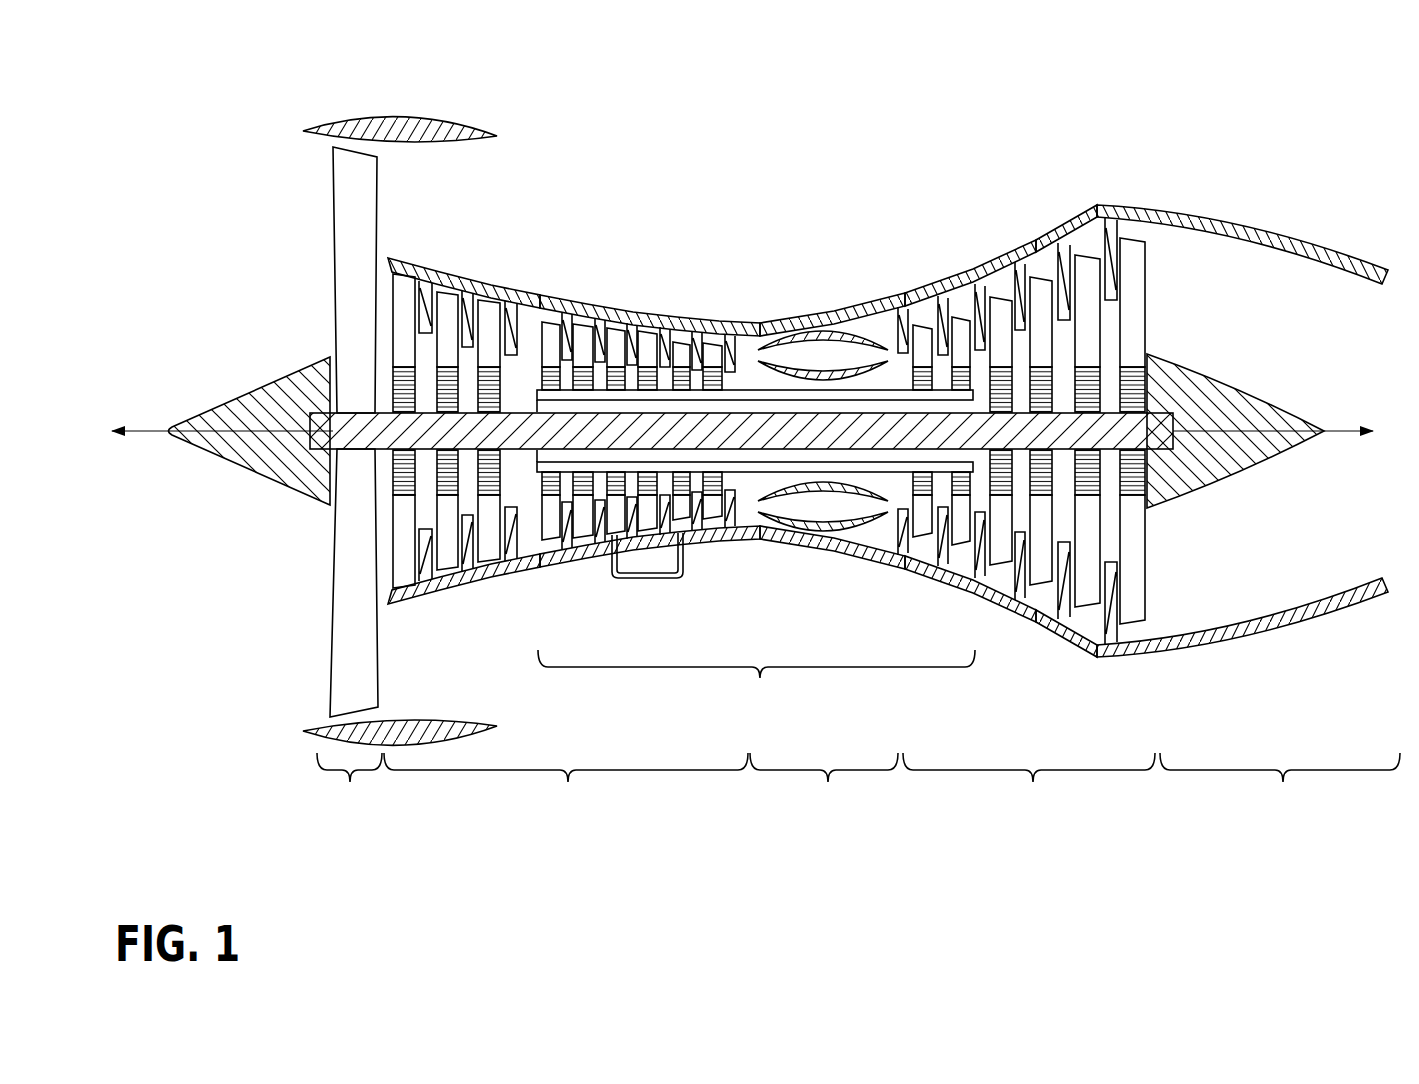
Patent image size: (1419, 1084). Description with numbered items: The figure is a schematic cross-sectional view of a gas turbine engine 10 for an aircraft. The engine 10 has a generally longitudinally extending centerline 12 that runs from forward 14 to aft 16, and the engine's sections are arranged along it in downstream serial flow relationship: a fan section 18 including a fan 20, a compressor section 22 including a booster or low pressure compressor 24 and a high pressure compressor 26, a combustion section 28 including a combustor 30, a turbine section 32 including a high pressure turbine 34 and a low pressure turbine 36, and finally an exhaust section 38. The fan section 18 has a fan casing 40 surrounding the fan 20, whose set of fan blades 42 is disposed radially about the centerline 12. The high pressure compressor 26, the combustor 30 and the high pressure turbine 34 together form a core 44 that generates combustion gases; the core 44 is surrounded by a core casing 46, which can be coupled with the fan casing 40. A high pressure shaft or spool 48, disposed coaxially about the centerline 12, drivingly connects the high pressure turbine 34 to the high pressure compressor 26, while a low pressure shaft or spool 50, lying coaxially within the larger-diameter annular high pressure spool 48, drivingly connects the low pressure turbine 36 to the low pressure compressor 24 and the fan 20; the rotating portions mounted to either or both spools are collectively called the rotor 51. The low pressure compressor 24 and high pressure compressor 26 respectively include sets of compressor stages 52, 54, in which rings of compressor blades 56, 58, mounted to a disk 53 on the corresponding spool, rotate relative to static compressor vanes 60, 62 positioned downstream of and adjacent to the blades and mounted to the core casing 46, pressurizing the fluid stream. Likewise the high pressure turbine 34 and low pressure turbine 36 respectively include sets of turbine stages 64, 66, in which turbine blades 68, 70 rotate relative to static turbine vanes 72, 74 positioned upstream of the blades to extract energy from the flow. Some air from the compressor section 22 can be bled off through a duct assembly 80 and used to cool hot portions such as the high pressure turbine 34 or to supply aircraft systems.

The gas turbine engine 10 is at (296, 80).
The centerline 12 is at (245, 430).
The forward 14 is at (157, 430).
The aft 16 is at (1337, 431).
The fan section 18 is at (350, 783).
The fan 20 is at (327, 226).
The compressor section 22 is at (567, 783).
The low pressure compressor 24 is at (516, 589).
The high pressure compressor 26 is at (694, 552).
The combustion section 28 is at (828, 783).
The combustor 30 is at (873, 328).
The turbine section 32 is at (1033, 783).
The high pressure turbine 34 is at (900, 582).
The low pressure turbine 36 is at (1023, 620).
The exhaust section 38 is at (1283, 783).
The fan casing 40 is at (407, 114).
The fan blades 42 is at (348, 635).
The core 44 is at (758, 676).
The core casing 46 is at (790, 350).
The HP shaft or spool 48 is at (753, 412).
The LP shaft or spool 50 is at (552, 283).
The rotor 51 is at (667, 405).
The compressor stages 52 is at (392, 240).
The disk 53 is at (520, 423).
The compressor stages 54 is at (556, 270).
The compressor blades 56 is at (400, 280).
The compressor blades 58 is at (567, 320).
The static compressor vanes 60 is at (490, 387).
The static compressor vanes 62 is at (553, 333).
The turbine stages 64 is at (931, 282).
The turbine stages 66 is at (1054, 227).
The turbine blades 68 is at (962, 320).
The turbine blades 70 is at (1085, 280).
The static turbine vanes 72 is at (943, 307).
The static turbine vanes 74 is at (1065, 277).
The duct assembly 80 is at (647, 580).